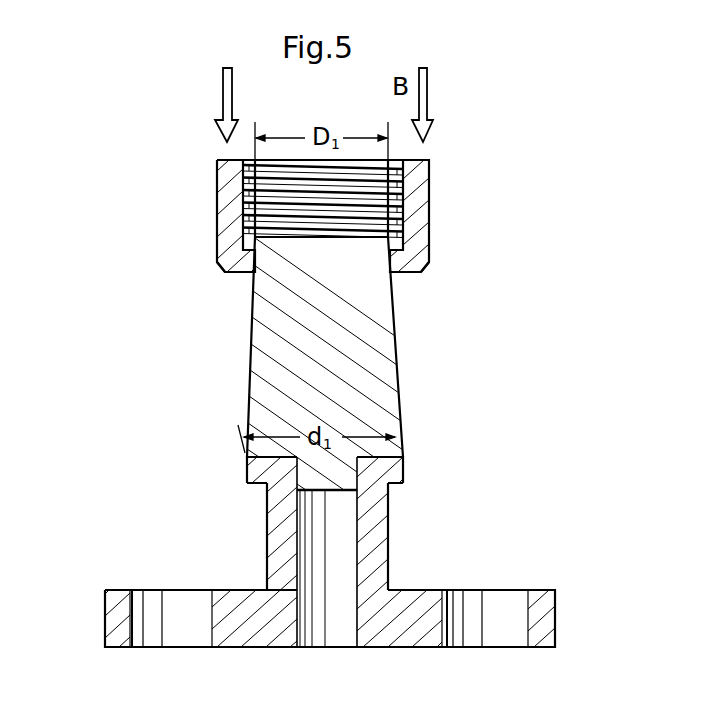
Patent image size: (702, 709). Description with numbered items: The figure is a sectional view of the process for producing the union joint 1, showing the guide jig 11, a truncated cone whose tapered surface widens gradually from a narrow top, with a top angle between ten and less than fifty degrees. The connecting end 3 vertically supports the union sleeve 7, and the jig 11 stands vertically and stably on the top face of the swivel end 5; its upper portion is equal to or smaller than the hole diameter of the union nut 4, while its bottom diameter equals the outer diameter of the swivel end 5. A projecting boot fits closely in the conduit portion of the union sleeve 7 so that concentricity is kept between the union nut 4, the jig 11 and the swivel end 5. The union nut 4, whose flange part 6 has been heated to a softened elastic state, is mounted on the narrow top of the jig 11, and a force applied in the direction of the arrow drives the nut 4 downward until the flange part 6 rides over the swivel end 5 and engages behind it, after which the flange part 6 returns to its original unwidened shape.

The fastening structure 1 is at (227, 413).
The connecting end 3 is at (428, 590).
The union nut 4 is at (432, 183).
The swivel end 5 is at (257, 472).
The flange part 6 is at (217, 260).
The union sleeve 7 is at (278, 533).
The guide jig 11 is at (387, 337).